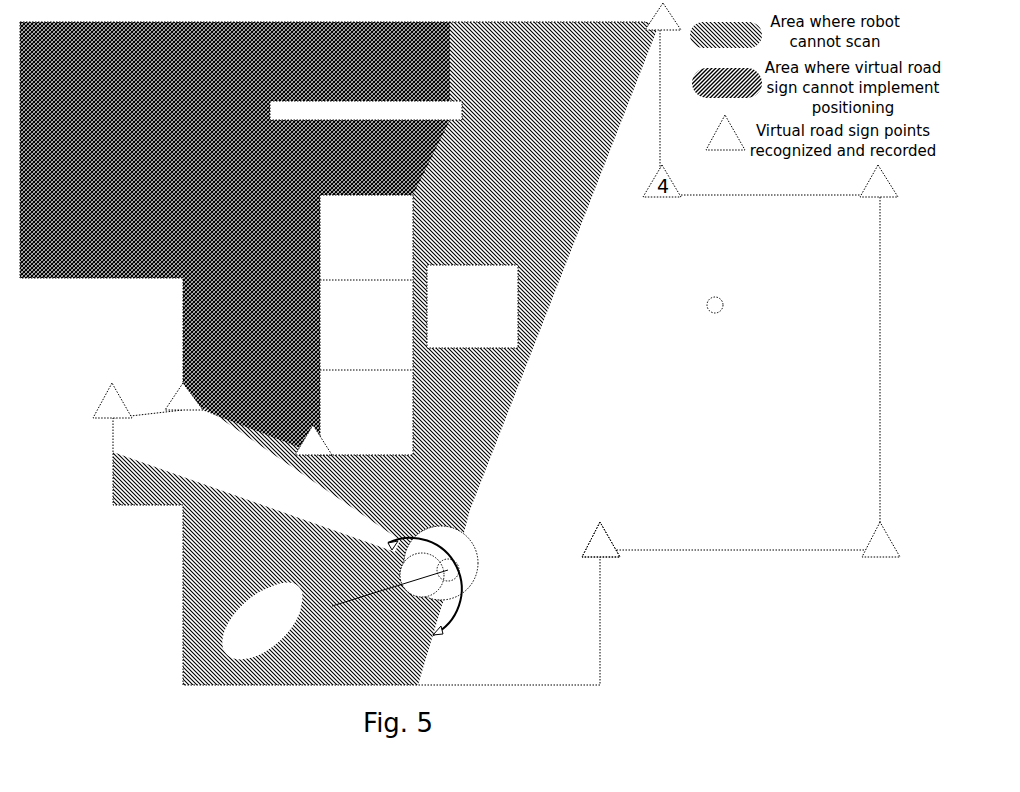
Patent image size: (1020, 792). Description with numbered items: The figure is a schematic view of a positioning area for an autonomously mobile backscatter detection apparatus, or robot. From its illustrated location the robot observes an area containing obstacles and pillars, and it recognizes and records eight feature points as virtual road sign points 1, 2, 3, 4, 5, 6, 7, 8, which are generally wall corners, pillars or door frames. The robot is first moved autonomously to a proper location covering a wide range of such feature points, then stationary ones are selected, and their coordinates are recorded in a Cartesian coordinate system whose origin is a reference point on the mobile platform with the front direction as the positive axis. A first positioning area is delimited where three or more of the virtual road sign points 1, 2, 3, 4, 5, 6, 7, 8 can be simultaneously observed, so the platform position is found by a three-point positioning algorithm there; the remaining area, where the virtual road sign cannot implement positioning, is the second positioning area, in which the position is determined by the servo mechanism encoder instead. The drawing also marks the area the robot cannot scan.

The virtual road sign point 1 is at (601, 539).
The virtual road sign point 2 is at (881, 539).
The virtual road sign point 3 is at (879, 181).
The virtual road sign point 4 is at (453, 567).
The virtual road sign point 5 is at (396, 237).
The virtual road sign point 6 is at (425, 108).
The virtual road sign point 7 is at (723, 303).
The virtual road sign point 8 is at (112, 400).